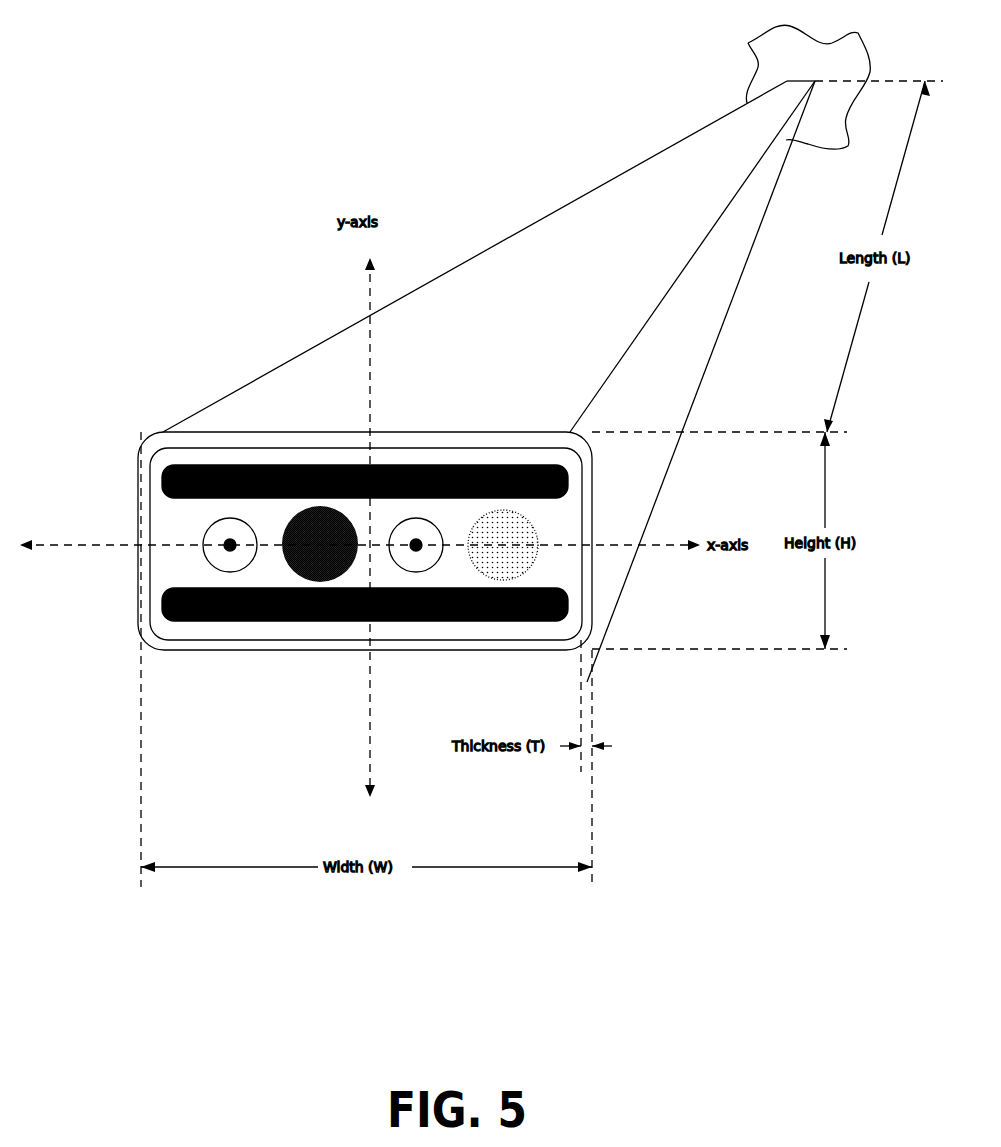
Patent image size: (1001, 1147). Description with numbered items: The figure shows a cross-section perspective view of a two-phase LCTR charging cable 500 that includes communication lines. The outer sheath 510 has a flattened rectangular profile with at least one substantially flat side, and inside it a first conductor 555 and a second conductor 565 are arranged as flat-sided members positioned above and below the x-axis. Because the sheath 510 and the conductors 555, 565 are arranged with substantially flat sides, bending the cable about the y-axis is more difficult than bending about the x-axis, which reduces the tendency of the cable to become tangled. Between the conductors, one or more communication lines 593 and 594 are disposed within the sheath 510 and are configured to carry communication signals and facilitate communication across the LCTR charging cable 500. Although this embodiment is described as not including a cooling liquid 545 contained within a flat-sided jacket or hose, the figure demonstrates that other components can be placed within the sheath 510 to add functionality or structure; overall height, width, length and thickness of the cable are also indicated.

The LCTR charging cable 500 is at (197, 250).
The sheath 510 is at (163, 438).
The first conductor 555 is at (162, 472).
The second conductor 565 is at (162, 600).
The communication line 593 is at (213, 530).
The communication line 594 is at (425, 530).
The cooling liquid 545 is at (505, 545).